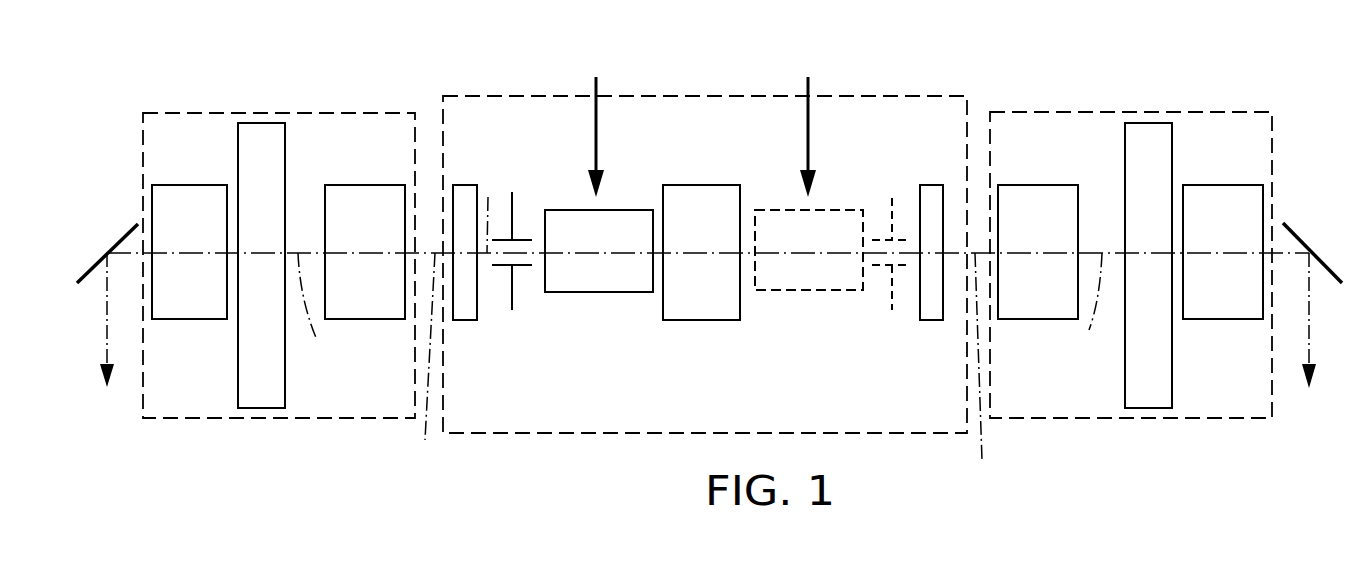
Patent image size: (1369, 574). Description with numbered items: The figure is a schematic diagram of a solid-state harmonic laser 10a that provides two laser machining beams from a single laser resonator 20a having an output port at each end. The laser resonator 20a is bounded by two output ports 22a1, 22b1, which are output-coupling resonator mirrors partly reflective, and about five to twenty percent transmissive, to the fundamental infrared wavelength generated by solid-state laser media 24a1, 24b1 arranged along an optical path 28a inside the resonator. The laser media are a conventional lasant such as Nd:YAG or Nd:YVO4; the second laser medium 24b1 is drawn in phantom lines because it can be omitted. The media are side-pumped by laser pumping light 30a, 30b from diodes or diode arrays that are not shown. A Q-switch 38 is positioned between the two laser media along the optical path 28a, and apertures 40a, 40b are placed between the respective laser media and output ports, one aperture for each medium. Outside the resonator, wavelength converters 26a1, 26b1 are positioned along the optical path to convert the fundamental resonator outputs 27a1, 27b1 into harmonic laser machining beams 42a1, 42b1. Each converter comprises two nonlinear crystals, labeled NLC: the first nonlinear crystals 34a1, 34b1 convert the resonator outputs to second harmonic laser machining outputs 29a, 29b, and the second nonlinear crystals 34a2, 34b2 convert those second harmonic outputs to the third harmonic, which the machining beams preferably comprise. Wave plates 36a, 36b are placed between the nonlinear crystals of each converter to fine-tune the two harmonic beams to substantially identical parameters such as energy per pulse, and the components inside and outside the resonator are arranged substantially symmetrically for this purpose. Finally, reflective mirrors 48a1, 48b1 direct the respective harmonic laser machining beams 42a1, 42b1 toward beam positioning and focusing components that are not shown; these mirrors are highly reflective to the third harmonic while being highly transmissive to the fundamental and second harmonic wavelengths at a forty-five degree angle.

The laser 10a is at (1172, 450).
The laser resonator 20a is at (842, 92).
The output port 22a1 is at (462, 185).
The output port 22b1 is at (927, 185).
The solid-state laser medium 24a1 is at (590, 292).
The solid-state laser medium 24b1 is at (805, 290).
The wavelength converter 26a1 is at (200, 113).
The wavelength converter 26b1 is at (1040, 112).
The resonator output 27a1 is at (440, 368).
The resonator output 27b1 is at (982, 378).
The optical path 28a is at (488, 197).
The second harmonic laser machining output 29a is at (318, 312).
The second harmonic laser machining output 29b is at (1088, 311).
The laser pumping light 30a is at (597, 142).
The laser pumping light 30b is at (807, 133).
The nonlinear crystal 34a1 is at (360, 319).
The nonlinear crystal 34a2 is at (180, 319).
The nonlinear crystal 34b1 is at (1027, 320).
The nonlinear crystal 34b2 is at (1214, 320).
The wave plate 36a is at (285, 157).
The wave plate 36b is at (1125, 157).
The Q-switch 38 is at (700, 320).
The aperture 40a is at (510, 288).
The aperture 40b is at (877, 292).
The harmonic laser machining beam 42a1 is at (107, 288).
The harmonic laser machining beam 42b1 is at (1309, 345).
The reflective mirror 48a1 is at (88, 263).
The reflective mirror 48b1 is at (1327, 262).